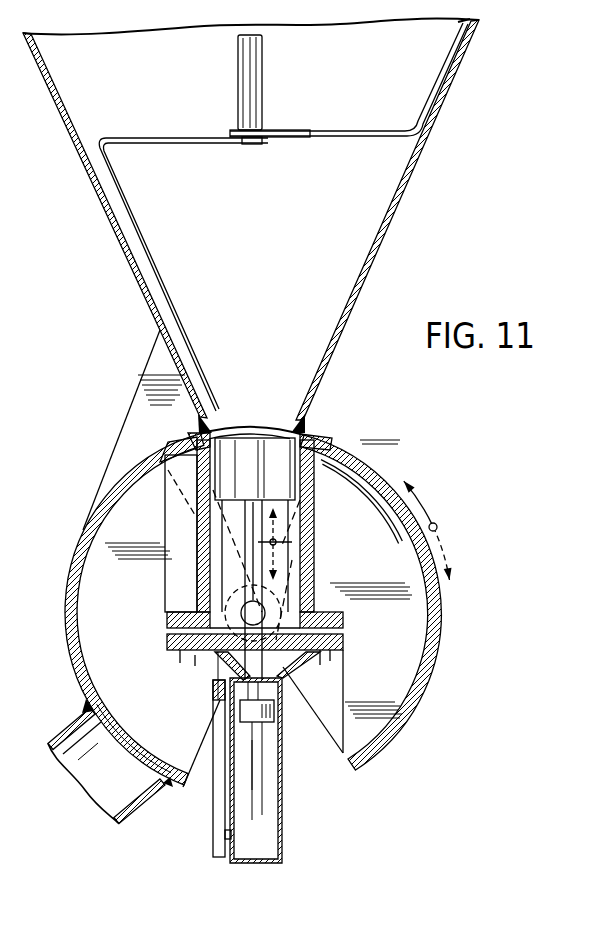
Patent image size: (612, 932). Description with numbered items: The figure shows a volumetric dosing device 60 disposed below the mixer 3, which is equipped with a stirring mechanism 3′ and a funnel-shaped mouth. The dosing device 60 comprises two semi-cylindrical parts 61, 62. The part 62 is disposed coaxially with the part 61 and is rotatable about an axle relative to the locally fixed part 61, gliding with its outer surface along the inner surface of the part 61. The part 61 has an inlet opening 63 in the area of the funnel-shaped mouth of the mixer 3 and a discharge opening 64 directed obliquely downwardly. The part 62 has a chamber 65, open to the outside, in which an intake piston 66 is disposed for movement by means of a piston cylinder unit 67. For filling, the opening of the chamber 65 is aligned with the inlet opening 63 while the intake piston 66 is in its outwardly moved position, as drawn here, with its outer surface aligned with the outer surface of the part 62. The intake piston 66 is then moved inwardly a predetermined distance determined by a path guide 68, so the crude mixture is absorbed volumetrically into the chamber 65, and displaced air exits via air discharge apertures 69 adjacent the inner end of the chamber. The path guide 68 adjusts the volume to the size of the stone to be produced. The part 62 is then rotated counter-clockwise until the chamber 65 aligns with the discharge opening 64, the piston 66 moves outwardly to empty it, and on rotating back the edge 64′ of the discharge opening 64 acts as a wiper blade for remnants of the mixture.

The mixer 3 is at (404, 195).
The stirring mechanism 3′ is at (370, 136).
The volumetric dosing device 60 is at (400, 444).
The semi-cylindrical part 61 is at (68, 585).
The semi-cylindrical part 62 is at (430, 628).
The inlet opening 63 is at (258, 428).
The discharge opening 64 is at (122, 750).
The edge 64′ is at (96, 713).
The chamber 65 is at (292, 543).
The intake piston 66 is at (302, 470).
The piston cylinder unit 67 is at (281, 772).
The path guide 68 is at (218, 827).
The air discharge apertures 69 is at (176, 620).